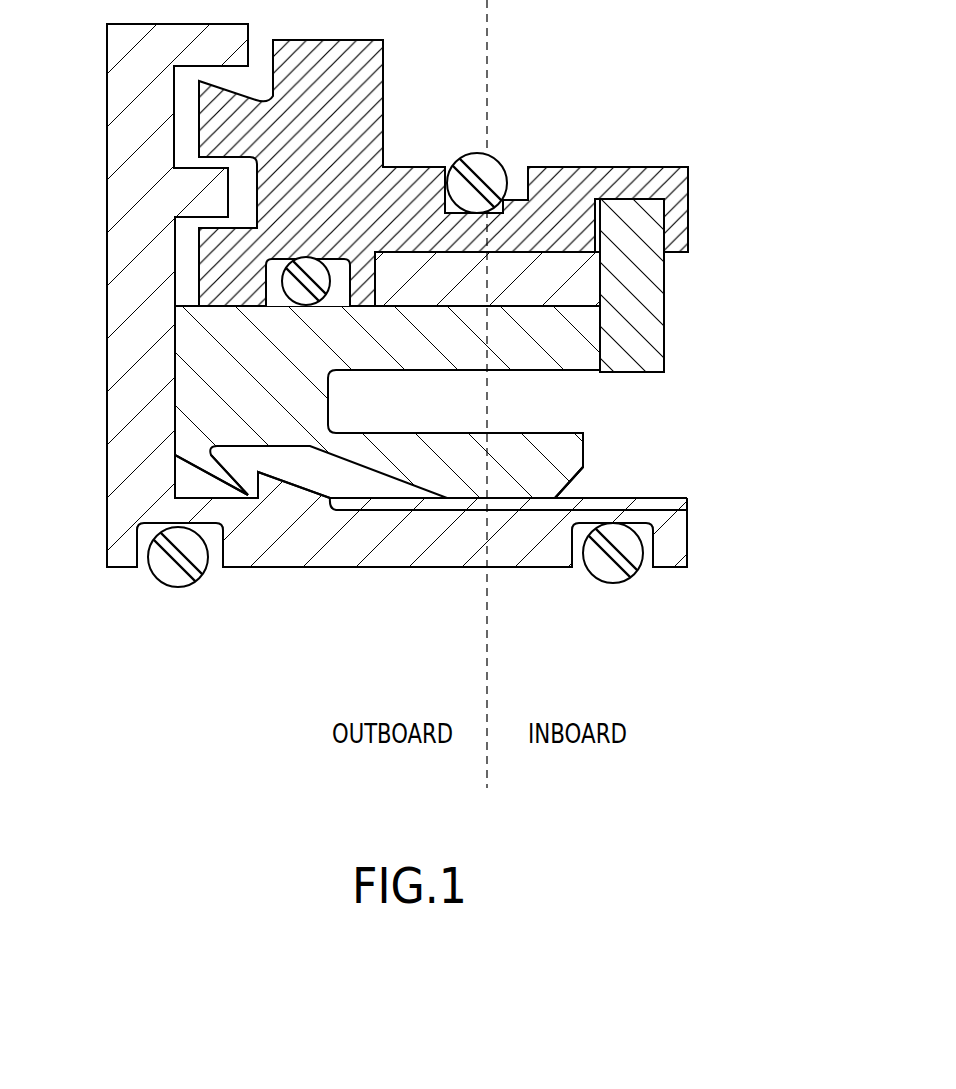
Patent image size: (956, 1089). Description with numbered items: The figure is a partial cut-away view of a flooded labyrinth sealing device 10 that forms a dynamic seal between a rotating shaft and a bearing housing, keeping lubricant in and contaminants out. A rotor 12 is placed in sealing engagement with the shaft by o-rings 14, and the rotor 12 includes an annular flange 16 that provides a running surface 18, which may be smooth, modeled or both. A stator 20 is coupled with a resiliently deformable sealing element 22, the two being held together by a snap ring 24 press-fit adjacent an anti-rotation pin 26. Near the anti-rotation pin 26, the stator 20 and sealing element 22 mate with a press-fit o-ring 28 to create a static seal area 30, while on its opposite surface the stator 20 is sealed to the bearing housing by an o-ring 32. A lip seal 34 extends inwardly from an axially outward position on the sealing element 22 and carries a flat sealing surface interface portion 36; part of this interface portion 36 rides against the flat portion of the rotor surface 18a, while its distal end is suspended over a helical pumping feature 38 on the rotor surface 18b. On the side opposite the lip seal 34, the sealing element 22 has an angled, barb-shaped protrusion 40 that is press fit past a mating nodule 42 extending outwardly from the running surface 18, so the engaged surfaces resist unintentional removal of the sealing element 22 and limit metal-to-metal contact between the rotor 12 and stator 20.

The labyrinth sealing device 10 is at (762, 134).
The rotor 12 is at (675, 540).
The o-ring 14 is at (160, 582).
The annular flange 16 is at (317, 543).
The running surface 18 is at (532, 539).
The flat portion of the rotor surface 18a is at (408, 510).
The rotor surface with helical pumping feature 18b is at (587, 508).
The stator 20 is at (583, 182).
The sealing element 22 is at (218, 383).
The snap ring 24 is at (630, 270).
The anti-rotation pin 26 is at (588, 288).
The o-ring 28 is at (290, 278).
The static seal area 30 is at (242, 307).
The o-ring 32 is at (470, 153).
The lip seal 34 is at (563, 446).
The sealing surface interface portion 36 is at (480, 476).
The helical pumping feature 38 is at (620, 480).
The protrusion 40 is at (217, 480).
The mating nodule 42 is at (270, 482).